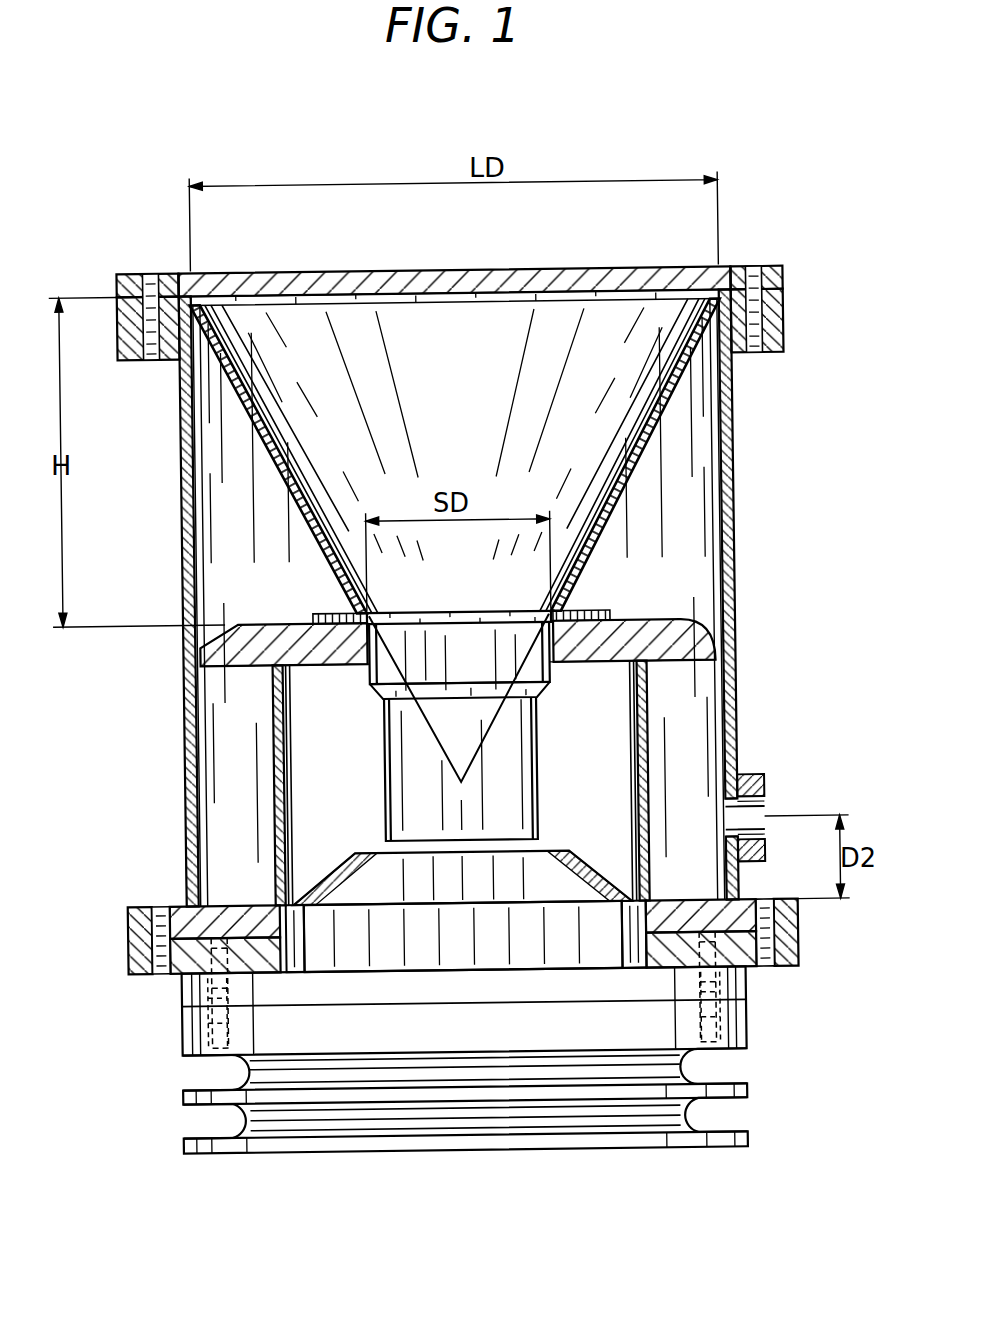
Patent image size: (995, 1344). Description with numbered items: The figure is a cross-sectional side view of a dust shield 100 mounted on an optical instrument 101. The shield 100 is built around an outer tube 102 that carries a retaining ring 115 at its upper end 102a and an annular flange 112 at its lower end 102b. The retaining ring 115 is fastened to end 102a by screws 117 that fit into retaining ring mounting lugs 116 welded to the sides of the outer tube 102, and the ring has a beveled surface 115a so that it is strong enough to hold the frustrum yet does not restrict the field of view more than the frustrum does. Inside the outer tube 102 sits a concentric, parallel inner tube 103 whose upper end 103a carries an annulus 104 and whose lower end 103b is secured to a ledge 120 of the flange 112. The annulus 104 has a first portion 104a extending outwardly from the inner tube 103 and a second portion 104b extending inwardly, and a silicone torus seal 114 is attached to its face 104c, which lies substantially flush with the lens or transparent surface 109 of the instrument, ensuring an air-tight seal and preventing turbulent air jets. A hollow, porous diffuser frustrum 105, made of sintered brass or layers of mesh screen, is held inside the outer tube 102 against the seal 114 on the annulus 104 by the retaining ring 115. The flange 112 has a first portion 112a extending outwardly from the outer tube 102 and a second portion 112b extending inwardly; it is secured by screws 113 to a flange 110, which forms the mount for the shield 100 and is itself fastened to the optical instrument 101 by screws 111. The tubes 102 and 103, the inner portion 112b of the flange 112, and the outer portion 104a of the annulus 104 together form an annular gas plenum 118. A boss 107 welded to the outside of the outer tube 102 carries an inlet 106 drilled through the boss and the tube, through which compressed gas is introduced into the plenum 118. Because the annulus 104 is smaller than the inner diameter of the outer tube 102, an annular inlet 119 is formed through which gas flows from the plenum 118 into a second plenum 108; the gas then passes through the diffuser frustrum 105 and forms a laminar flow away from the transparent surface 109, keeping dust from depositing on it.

The dust shield 100 is at (283, 1190).
The optical instrument 101 is at (540, 1150).
The outer tube 102 is at (183, 405).
The end of outer tube 102a is at (218, 312).
The end of outer tube 102b is at (186, 850).
The inner tube 103 is at (290, 822).
The end of inner tube 103a is at (283, 732).
The end of inner tube 103b is at (604, 872).
The annulus 104 is at (600, 666).
The first portion of annulus 104a is at (215, 670).
The second portion of annulus 104b is at (289, 666).
The face of annulus 104c is at (269, 622).
The hollow porous diffuser frustrum 105 is at (283, 470).
The inlet 106 is at (772, 818).
The boss 107 is at (754, 778).
The plenum 108 is at (240, 505).
The transparent surface 109 is at (470, 612).
The flange 110 is at (124, 960).
The screws 111 is at (205, 995).
The annular flange 112 is at (124, 930).
The first portion of flange 112a is at (183, 902).
The second portion of flange 112b is at (257, 972).
The screws 113 is at (150, 906).
The silicone torus seal 114 is at (320, 612).
The retaining ring 115 is at (119, 282).
The beveled surface 115a is at (188, 280).
The retaining ring mounting lugs 116 is at (119, 340).
The screws 117 is at (153, 270).
The gas plenum 118 is at (240, 762).
The annular inlet 119 is at (200, 636).
The ledge 120 is at (655, 903).